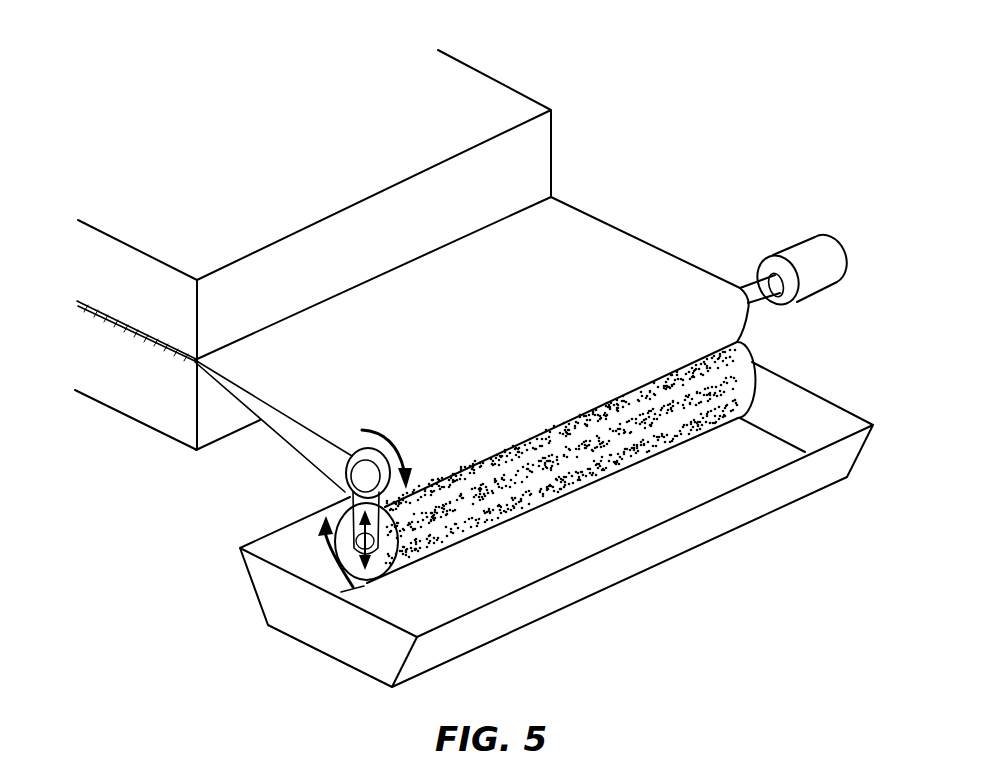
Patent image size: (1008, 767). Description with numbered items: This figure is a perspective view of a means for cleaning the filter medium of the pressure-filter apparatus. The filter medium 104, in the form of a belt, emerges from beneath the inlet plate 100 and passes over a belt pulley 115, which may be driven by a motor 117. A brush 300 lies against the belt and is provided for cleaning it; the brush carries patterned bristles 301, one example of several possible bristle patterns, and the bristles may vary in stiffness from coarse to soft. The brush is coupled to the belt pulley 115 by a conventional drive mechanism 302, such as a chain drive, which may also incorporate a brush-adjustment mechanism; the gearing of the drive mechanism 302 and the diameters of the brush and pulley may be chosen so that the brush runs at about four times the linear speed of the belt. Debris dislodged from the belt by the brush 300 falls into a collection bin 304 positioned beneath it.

The inlet plate 100 is at (453, 102).
The filter medium 104 is at (577, 242).
The motor 117 is at (810, 253).
The belt pulley 115 is at (347, 463).
The drive mechanism 302 is at (326, 496).
The brush 300 is at (632, 440).
The patterned bristles 301 is at (566, 482).
The collection bin 304 is at (302, 630).